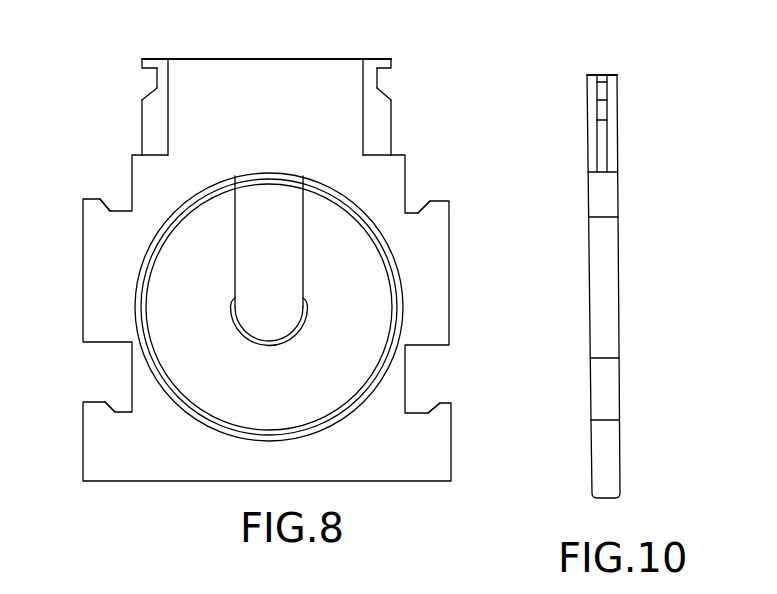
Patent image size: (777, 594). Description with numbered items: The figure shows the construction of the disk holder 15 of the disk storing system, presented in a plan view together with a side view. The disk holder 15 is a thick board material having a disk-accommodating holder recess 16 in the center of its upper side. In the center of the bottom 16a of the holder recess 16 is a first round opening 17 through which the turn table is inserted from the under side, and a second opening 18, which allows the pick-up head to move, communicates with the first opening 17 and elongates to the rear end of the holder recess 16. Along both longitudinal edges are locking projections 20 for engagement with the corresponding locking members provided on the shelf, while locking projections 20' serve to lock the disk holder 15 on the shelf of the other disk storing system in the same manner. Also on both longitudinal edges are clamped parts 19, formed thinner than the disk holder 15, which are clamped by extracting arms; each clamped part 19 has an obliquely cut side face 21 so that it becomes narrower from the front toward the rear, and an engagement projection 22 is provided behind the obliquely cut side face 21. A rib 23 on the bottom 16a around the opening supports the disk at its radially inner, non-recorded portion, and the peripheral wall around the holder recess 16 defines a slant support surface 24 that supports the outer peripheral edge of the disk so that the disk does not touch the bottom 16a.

In FIG. 8, the disk holder 15 is at (74, 246).
In FIG. 10, the disk holder 15 is at (620, 278).
In FIG. 8, the holder recess 16 is at (134, 307).
In FIG. 8, the bottom of holder recess 16a is at (182, 377).
In FIG. 8, the first round opening 17 is at (262, 328).
In FIG. 8, the second opening 18 is at (297, 250).
In FIG. 8, the clamped part 19 is at (159, 103).
In FIG. 10, the clamped part 19 is at (605, 145).
In FIG. 8, the locking projection 20 is at (76, 270).
In FIG. 8, the locking projection 20' is at (466, 273).
In FIG. 10, the locking projection 20' is at (648, 292).
In FIG. 8, the obliquely cut side face 21 is at (148, 91).
In FIG. 10, the obliquely cut side face 21 is at (605, 110).
In FIG. 8, the engagement projection 22 is at (148, 57).
In FIG. 10, the engagement projection 22 is at (600, 75).
In FIG. 8, the rib 23 is at (292, 332).
In FIG. 8, the slant support surface 24 is at (361, 403).